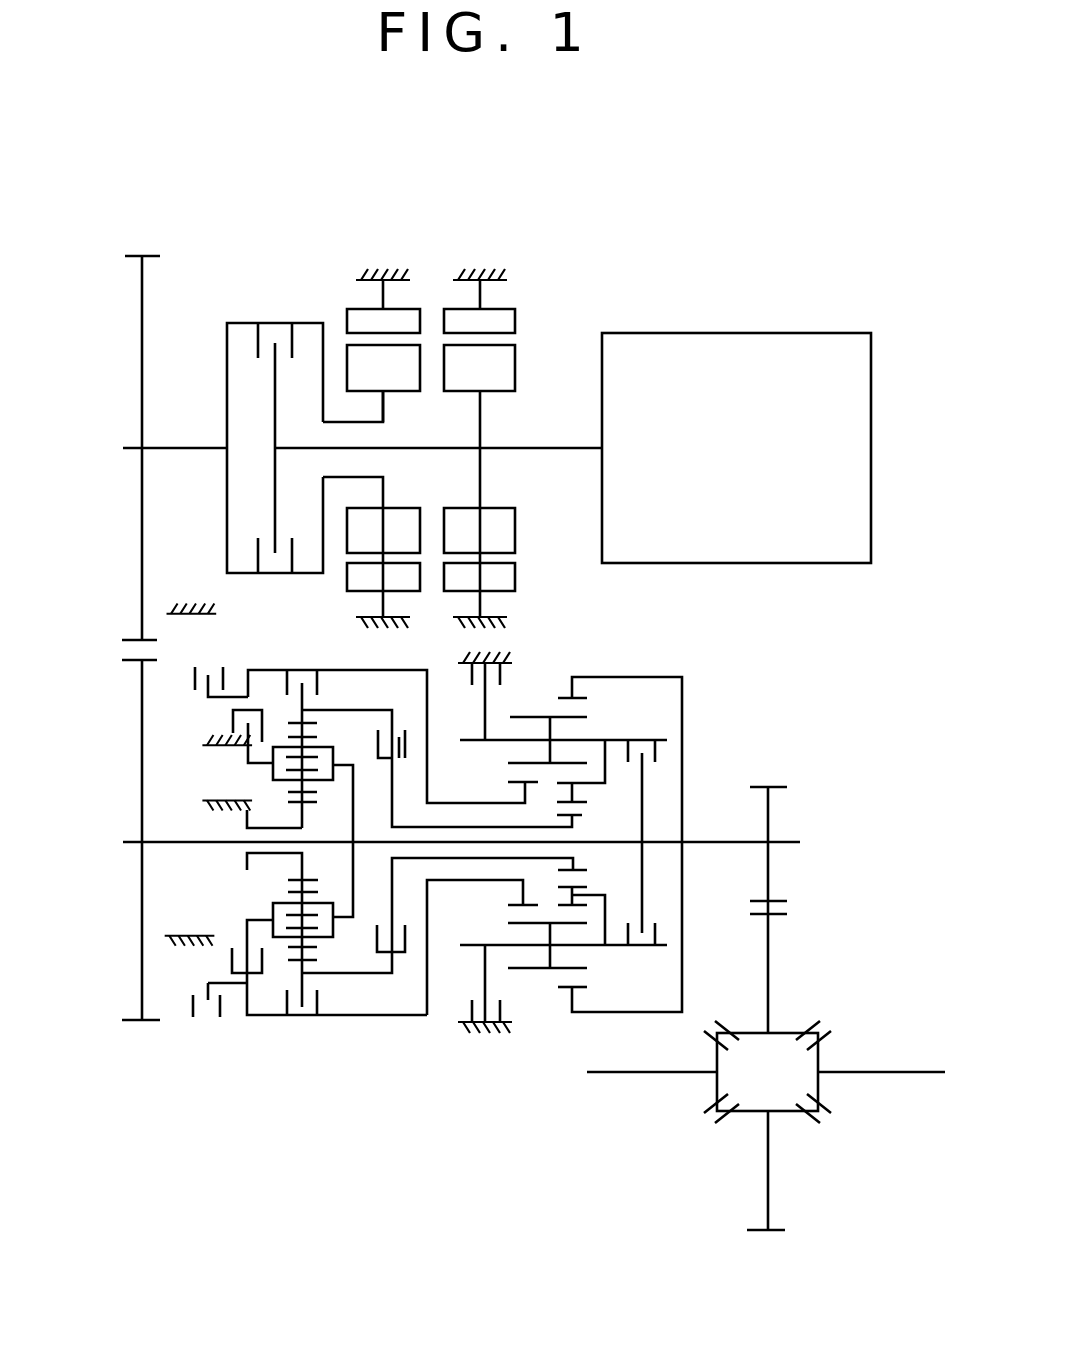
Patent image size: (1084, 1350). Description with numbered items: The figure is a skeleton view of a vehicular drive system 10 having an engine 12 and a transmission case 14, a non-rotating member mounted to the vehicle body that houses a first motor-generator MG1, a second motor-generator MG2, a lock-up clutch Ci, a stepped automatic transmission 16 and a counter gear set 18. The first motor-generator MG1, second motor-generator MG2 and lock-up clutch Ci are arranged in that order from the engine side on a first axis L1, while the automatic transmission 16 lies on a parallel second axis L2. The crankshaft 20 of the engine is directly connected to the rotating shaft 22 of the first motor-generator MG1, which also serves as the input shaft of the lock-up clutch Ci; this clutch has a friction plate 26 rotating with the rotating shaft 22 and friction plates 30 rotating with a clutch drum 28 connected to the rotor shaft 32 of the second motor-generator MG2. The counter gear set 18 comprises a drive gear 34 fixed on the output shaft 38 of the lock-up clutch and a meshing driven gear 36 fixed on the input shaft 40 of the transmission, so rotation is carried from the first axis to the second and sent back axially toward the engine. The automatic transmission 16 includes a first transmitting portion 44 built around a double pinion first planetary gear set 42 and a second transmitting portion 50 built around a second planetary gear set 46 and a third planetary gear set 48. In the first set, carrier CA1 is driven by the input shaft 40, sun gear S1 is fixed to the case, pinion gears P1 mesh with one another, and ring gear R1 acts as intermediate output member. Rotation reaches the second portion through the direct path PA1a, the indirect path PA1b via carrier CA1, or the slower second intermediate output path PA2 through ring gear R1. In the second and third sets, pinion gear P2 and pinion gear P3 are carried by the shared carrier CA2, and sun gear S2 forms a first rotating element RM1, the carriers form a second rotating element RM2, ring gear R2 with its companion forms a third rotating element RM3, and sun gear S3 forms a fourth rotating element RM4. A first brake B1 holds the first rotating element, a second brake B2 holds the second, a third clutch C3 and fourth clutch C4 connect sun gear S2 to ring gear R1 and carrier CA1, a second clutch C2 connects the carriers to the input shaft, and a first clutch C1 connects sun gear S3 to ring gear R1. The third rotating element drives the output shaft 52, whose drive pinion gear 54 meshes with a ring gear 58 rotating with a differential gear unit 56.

The vehicular drive system 10 is at (656, 166).
The engine 12 is at (828, 343).
The transmission case 14 is at (497, 266).
The stepped automatic transmission 16 is at (431, 899).
The counter gear set 18 is at (130, 230).
The crankshaft 20 is at (577, 447).
The rotating shaft 22 is at (488, 450).
The friction plate 26 is at (275, 420).
The clutch drum 28 is at (305, 320).
The friction plates 30 is at (257, 345).
The rotor shaft 32 is at (330, 418).
The drive gear 34 is at (128, 636).
The driven gear 36 is at (128, 665).
The output shaft 38 is at (188, 452).
The input shaft 40 is at (165, 838).
The first planetary gear set 42 is at (327, 990).
The first transmitting portion 44 is at (292, 904).
The second planetary gear set 46 is at (513, 917).
The third planetary gear set 48 is at (563, 928).
The second transmitting portion 50 is at (615, 867).
The output shaft 52 is at (720, 838).
The drive pinion gear 54 is at (777, 783).
The differential gear unit 56 is at (831, 1008).
The ring gear 58 is at (768, 970).
The lock-up clutch Ci is at (247, 393).
The first motor-generator MG1 is at (479, 448).
The second motor-generator MG2 is at (383, 448).
The first axis L1 is at (341, 448).
The second axis L2 is at (440, 841).
The first brake B1 is at (207, 650).
The second brake B2 is at (470, 989).
The first clutch C1 is at (372, 737).
The second clutch C2 is at (654, 842).
The third clutch C3 is at (393, 719).
The fourth clutch C4 is at (232, 736).
The pinion gears P1 is at (310, 800).
The pinion gear P2 is at (520, 758).
The pinion gear P3 is at (580, 803).
The sun gear S1 is at (308, 878).
The sun gear S2 is at (520, 783).
The sun gear S3 is at (577, 822).
The ring gear R1 is at (293, 962).
The ring gear R2 is at (563, 693).
The carrier CA1 is at (273, 915).
The carrier CA2 is at (600, 740).
The first rotating element RM1 is at (418, 1032).
The second rotating element RM2 is at (500, 728).
The third rotating element RM3 is at (646, 665).
The fourth rotating element RM4 is at (492, 870).
The direct path PA1a is at (587, 849).
The indirect path PA1b is at (241, 753).
The second intermediate output path PA2 is at (380, 707).